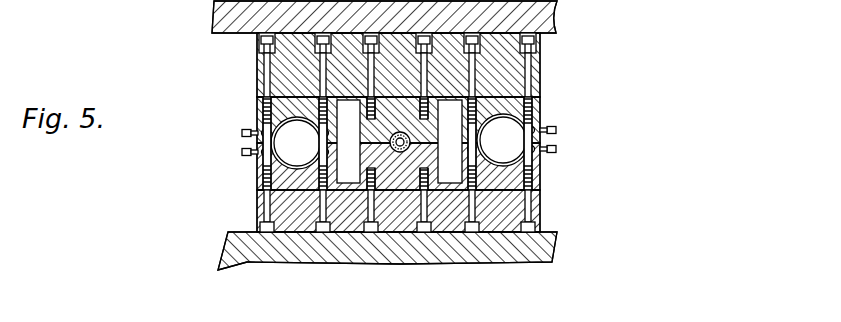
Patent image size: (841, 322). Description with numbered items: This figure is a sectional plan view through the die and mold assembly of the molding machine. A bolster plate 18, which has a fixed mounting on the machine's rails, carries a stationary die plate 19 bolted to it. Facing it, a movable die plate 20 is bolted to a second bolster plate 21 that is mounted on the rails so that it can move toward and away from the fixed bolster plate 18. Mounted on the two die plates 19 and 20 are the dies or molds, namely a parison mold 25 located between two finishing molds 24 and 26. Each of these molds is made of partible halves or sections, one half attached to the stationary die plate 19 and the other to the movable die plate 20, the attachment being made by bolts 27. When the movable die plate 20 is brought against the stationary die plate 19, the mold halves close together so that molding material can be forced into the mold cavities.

The bolster plate 18 is at (230, 247).
The stationary die plate 19 is at (260, 203).
The movable die plate 20 is at (260, 62).
The bolster plate 21 is at (228, 20).
The finishing mold 24 is at (541, 165).
The parison mold 25 is at (432, 162).
The finishing mold 26 is at (263, 176).
The bolts 27 is at (528, 63).